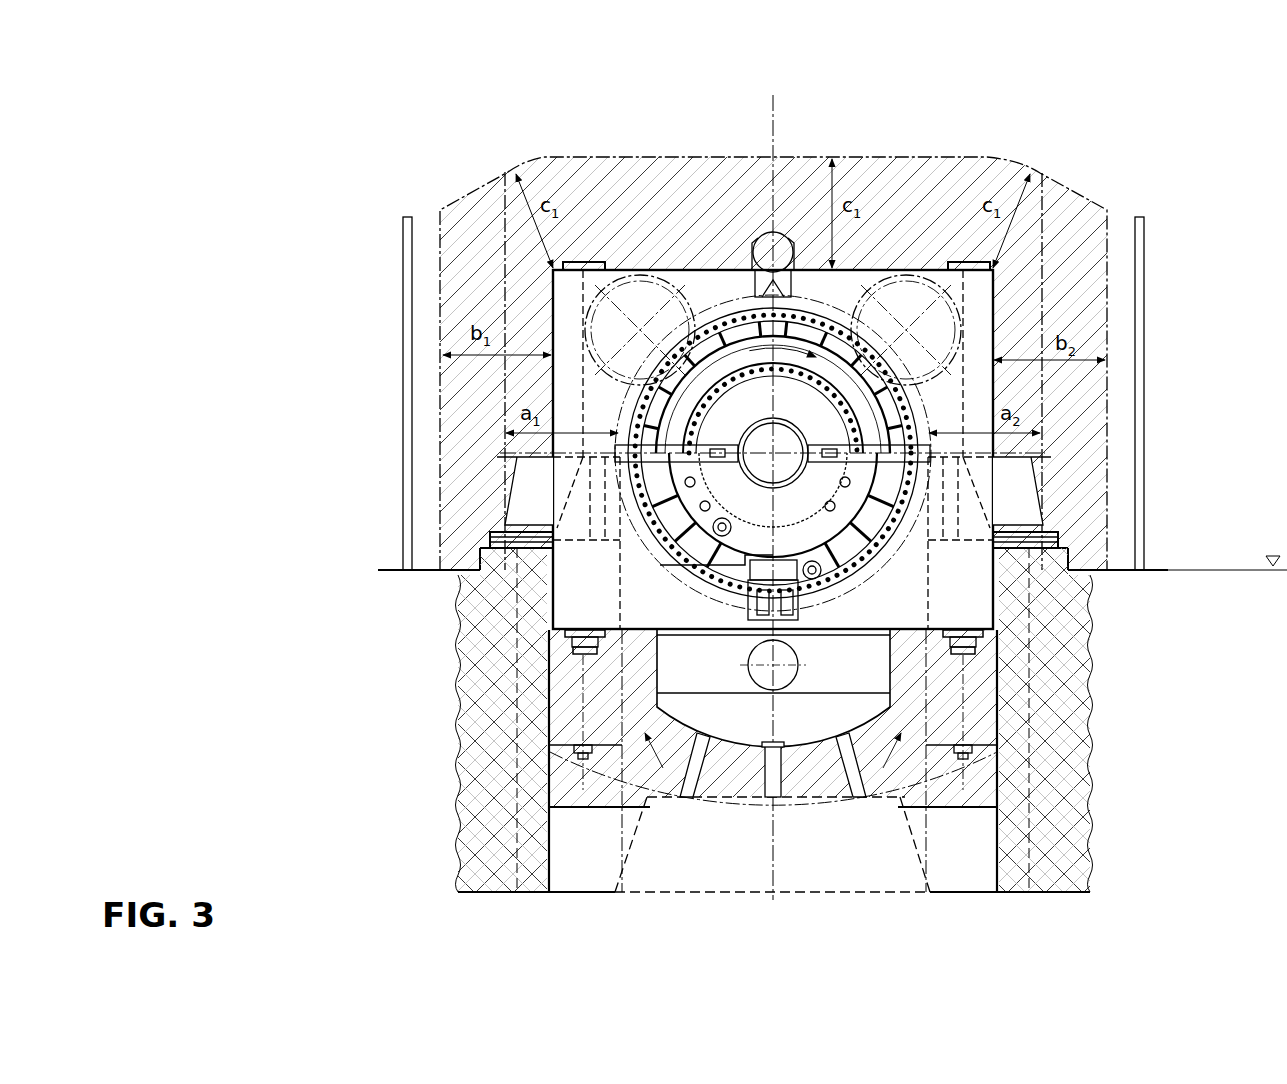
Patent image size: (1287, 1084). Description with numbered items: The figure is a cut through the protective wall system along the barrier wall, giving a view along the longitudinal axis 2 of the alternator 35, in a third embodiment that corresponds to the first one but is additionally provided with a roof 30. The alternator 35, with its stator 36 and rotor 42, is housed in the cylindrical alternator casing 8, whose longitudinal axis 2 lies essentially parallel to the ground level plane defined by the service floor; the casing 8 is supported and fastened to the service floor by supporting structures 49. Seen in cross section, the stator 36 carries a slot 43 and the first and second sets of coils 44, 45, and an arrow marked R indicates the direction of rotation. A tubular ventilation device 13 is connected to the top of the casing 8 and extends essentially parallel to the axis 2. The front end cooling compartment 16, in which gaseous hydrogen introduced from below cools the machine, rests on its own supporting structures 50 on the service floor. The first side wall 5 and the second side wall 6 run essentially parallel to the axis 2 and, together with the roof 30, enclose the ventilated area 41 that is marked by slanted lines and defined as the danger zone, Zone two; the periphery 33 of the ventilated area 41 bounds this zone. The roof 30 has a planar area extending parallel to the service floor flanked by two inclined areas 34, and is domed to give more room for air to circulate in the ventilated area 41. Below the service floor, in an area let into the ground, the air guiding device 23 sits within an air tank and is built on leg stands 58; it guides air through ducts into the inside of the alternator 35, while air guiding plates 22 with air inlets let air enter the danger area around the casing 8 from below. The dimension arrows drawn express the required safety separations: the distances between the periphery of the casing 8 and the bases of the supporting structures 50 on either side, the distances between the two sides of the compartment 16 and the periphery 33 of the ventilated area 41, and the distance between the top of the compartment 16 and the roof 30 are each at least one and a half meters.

The longitudinal axis 2 is at (776, 452).
The first side wall 5 is at (832, 393).
The second side wall 6 is at (1080, 393).
The alternator casing 8 is at (604, 410).
The ventilation device 13 is at (763, 250).
The front end cooling compartment 16 is at (975, 320).
The air guiding plate 22 is at (575, 810).
The air guiding device 23 is at (843, 670).
The roof 30 is at (888, 155).
The periphery of the ventilated area 33 is at (665, 539).
The inclined area of the roof 34 is at (1072, 185).
The alternator 35 is at (660, 565).
The stator 36 is at (878, 520).
The ventilated area 41 is at (587, 204).
The rotor 42 is at (725, 427).
The slot of the stator 43 is at (833, 533).
The first set of coils 44 is at (930, 398).
The second set of coils 45 is at (905, 552).
The supporting structures of the alternator casing 49 is at (593, 503).
The supporting structures of the cooling compartments 50 is at (530, 480).
The leg stand 58 is at (768, 785).